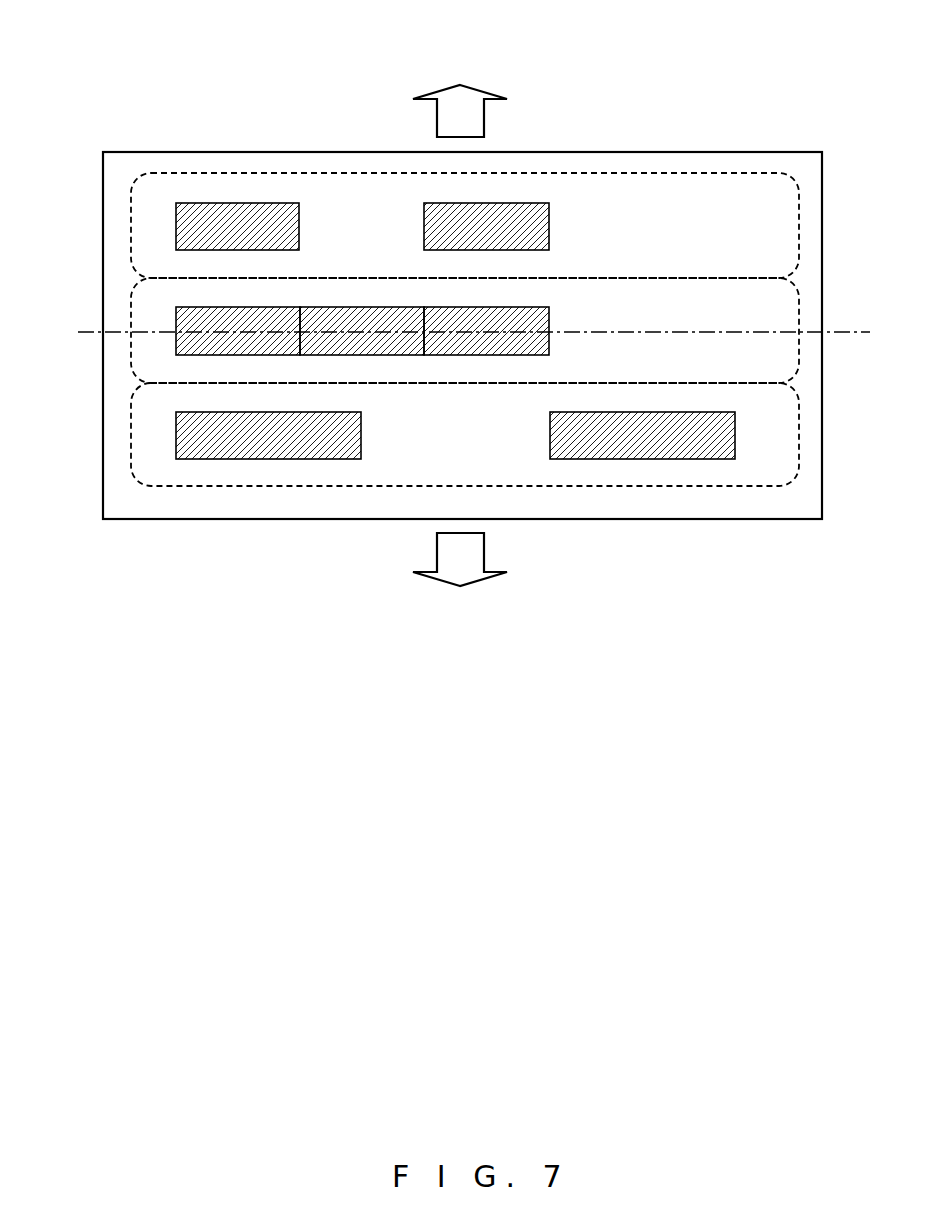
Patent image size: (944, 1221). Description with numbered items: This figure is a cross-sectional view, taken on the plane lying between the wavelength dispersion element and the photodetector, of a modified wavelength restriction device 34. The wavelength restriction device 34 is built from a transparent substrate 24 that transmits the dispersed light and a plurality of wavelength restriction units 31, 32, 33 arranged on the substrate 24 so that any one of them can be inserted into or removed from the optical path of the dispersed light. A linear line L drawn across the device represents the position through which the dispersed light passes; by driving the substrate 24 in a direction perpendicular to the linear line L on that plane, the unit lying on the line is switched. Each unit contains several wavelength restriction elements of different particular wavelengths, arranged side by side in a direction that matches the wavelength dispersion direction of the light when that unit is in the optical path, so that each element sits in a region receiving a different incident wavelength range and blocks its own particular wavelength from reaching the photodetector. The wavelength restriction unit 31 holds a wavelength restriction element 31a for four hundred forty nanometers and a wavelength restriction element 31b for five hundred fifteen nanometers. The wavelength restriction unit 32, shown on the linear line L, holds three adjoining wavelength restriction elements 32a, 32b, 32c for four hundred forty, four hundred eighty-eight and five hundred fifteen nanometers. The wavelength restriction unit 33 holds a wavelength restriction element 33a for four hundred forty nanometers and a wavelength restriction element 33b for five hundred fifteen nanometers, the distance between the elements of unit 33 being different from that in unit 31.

The substrate 24 is at (662, 160).
The wavelength restriction device 34 is at (820, 56).
The wavelength restriction unit 31 is at (131, 222).
The wavelength restriction element 31a is at (293, 232).
The wavelength restriction element 31b is at (543, 232).
The wavelength restriction unit 32 is at (131, 310).
The wavelength restriction element 32a is at (228, 318).
The wavelength restriction element 32b is at (355, 318).
The wavelength restriction element 32c is at (476, 318).
The wavelength restriction unit 33 is at (131, 440).
The wavelength restriction element 33a is at (355, 440).
The wavelength restriction element 33b is at (727, 440).
The linear line L is at (846, 330).